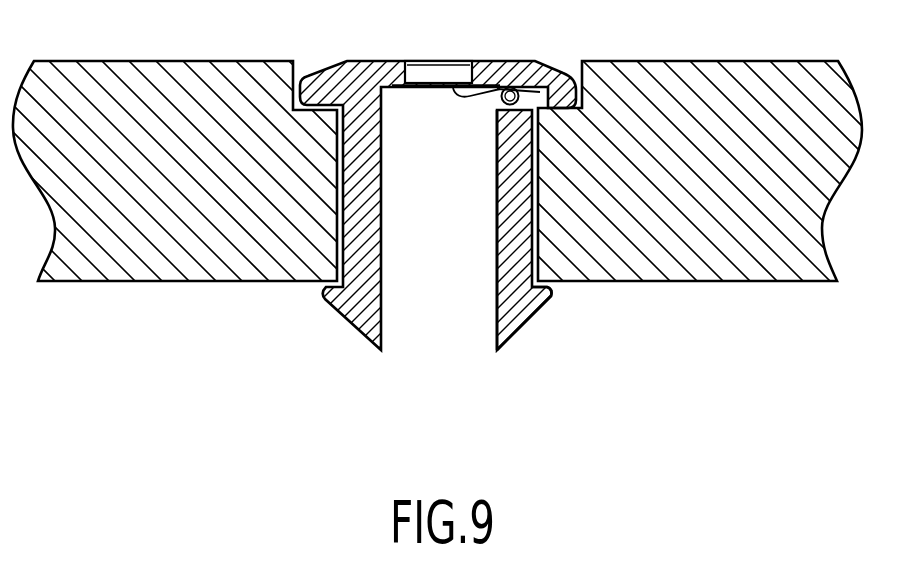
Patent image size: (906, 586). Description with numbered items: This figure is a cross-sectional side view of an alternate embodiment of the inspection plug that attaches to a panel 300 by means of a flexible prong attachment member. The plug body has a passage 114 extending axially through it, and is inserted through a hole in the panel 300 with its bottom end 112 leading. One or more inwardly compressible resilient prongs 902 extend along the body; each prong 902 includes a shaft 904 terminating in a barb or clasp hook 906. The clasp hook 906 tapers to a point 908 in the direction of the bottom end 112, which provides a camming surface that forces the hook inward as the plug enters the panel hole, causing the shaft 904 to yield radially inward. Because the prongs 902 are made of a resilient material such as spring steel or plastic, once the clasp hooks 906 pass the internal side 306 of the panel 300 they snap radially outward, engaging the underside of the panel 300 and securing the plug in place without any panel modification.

The passage 114 is at (407, 149).
The panel 300 is at (714, 144).
The internal side of the panel 306 is at (207, 282).
The bottom end 112 is at (393, 328).
The flexible prong 902 is at (496, 260).
The shaft 904 is at (520, 203).
The clasp hook 906 is at (522, 312).
The point 908 is at (495, 348).